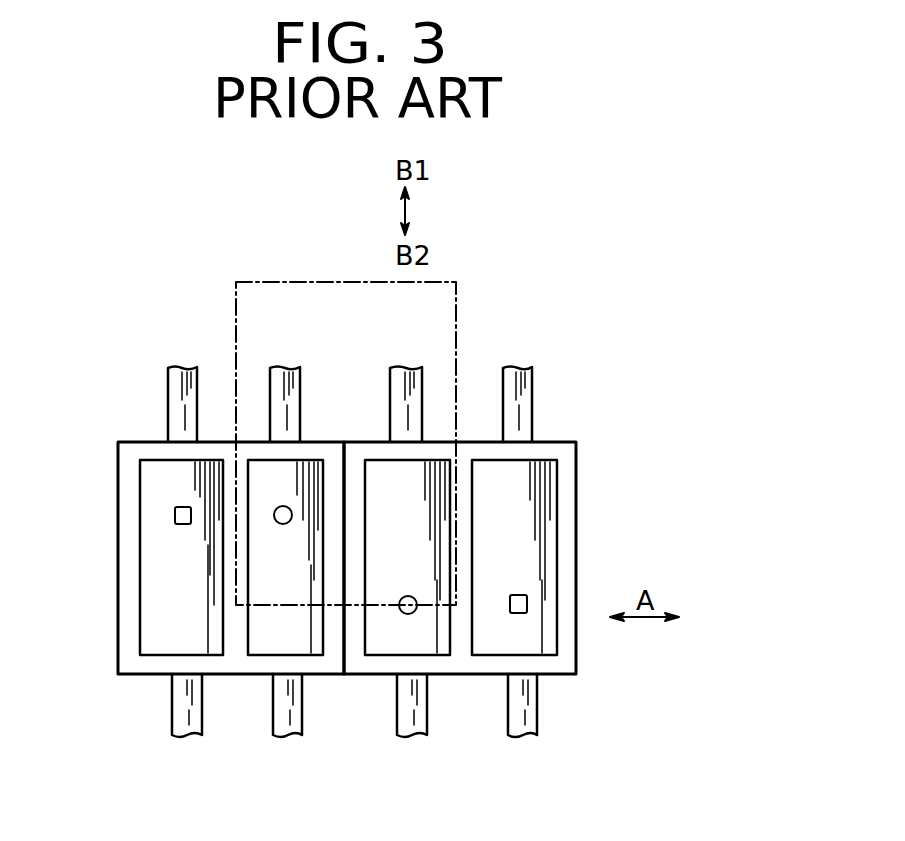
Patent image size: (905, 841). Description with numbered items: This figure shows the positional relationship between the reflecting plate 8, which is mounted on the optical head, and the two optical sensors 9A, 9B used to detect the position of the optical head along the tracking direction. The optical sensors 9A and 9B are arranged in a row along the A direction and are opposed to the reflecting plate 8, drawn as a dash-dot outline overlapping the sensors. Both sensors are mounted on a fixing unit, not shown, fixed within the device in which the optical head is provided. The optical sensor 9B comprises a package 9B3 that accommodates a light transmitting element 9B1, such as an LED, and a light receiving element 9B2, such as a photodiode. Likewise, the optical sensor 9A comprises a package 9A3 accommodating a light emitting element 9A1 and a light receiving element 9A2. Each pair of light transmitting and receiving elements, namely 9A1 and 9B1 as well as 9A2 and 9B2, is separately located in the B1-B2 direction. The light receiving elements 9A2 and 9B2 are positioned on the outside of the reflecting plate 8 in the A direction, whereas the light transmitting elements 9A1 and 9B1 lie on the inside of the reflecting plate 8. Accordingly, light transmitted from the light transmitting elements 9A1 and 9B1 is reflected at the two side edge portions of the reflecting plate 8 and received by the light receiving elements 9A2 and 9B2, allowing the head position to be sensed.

The reflecting plate 8 is at (442, 344).
The optical sensor 9A is at (485, 554).
The light emitting element 9A1 is at (406, 614).
The light receiving element 9A2 is at (527, 602).
The package 9A3 is at (572, 443).
The optical sensor 9B is at (193, 531).
The light transmitting element 9B1 is at (281, 506).
The light receiving element 9B2 is at (178, 507).
The package 9B3 is at (128, 497).